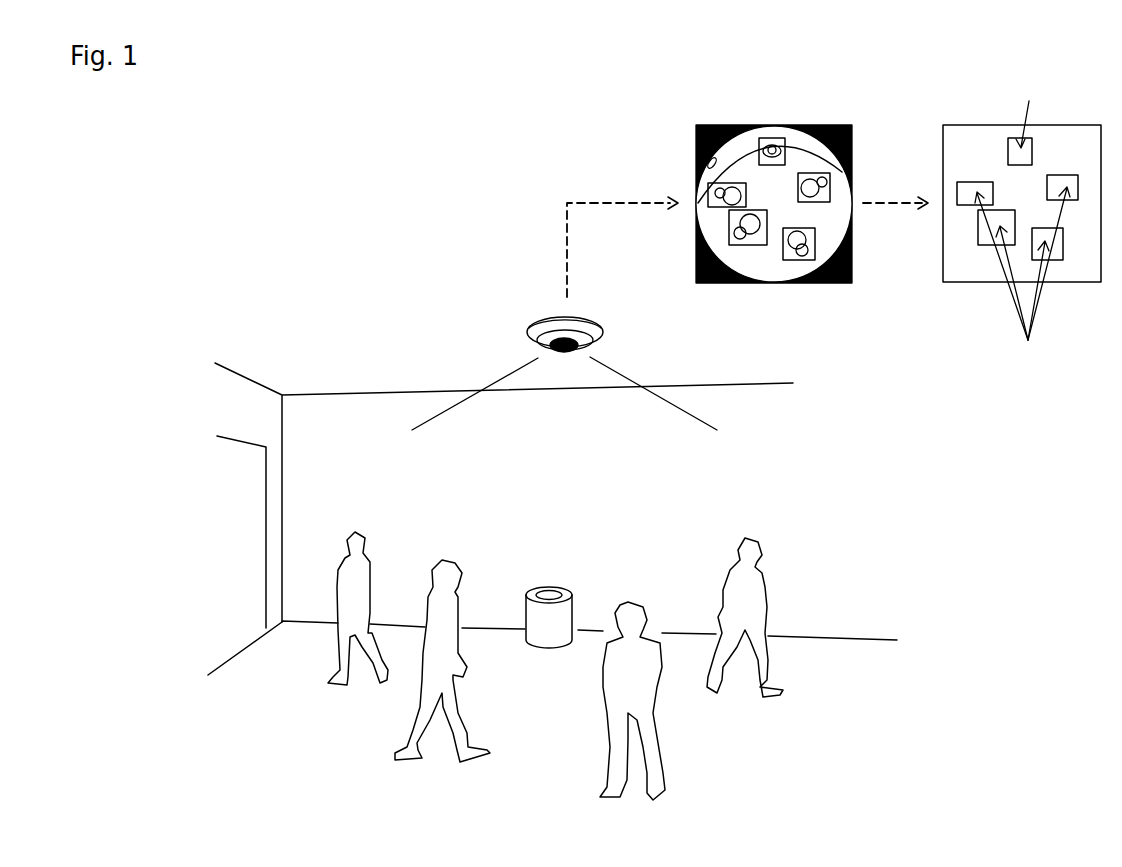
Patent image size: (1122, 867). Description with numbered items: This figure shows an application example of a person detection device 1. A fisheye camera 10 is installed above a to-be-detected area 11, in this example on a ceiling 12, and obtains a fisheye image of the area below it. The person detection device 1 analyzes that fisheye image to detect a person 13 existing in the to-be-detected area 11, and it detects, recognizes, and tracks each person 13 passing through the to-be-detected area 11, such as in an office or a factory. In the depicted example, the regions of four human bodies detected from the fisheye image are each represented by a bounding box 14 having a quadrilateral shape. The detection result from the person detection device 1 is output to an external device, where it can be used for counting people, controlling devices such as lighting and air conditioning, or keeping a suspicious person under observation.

The person detection device 1 is at (533, 337).
The fisheye camera 10 is at (565, 353).
The to-be-detected area 11 is at (562, 719).
The ceiling 12 is at (391, 323).
The person 13 is at (353, 533).
The bounding box 14 is at (708, 190).